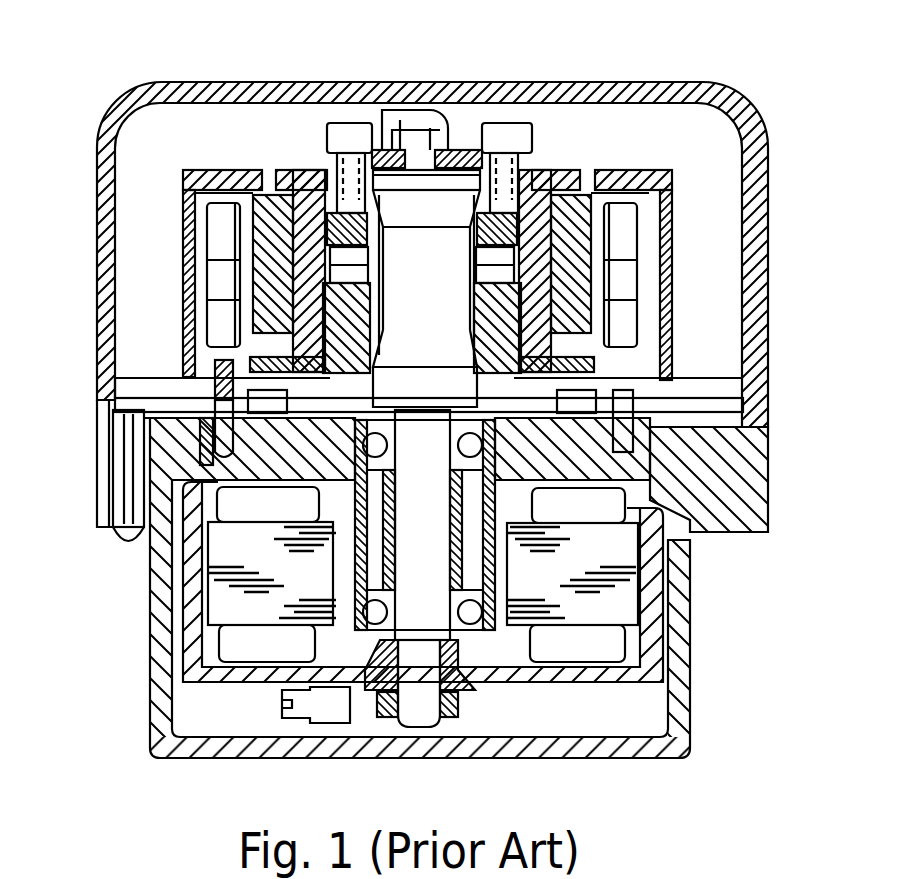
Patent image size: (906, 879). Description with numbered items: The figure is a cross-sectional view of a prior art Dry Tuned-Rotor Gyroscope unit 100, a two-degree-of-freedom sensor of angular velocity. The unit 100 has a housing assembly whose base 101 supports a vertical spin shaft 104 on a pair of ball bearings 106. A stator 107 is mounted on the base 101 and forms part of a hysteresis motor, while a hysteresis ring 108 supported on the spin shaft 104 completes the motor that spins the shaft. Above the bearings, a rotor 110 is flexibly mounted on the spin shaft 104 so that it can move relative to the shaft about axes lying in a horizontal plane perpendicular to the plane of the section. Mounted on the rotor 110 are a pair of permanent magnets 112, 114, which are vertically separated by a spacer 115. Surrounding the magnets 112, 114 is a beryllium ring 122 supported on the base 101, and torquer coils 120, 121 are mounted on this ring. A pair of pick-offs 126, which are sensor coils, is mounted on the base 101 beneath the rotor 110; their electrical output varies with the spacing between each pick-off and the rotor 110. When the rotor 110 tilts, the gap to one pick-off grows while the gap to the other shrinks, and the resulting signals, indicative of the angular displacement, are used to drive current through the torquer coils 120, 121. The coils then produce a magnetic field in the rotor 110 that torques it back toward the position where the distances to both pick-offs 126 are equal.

The unit 100 is at (440, 82).
The base 101 is at (738, 471).
The spin shaft 104 is at (422, 615).
The ball bearings 106 is at (387, 603).
The stator 107 is at (248, 643).
The hysteresis ring 108 is at (617, 677).
The rotor 110 is at (608, 170).
The permanent magnet 112 is at (596, 237).
The permanent magnet 114 is at (600, 323).
The spacer 115 is at (598, 272).
The torquer coil 120 is at (215, 232).
The torquer coil 121 is at (636, 337).
The beryllium ring 122 is at (240, 386).
The pick-offs 126 is at (290, 398).